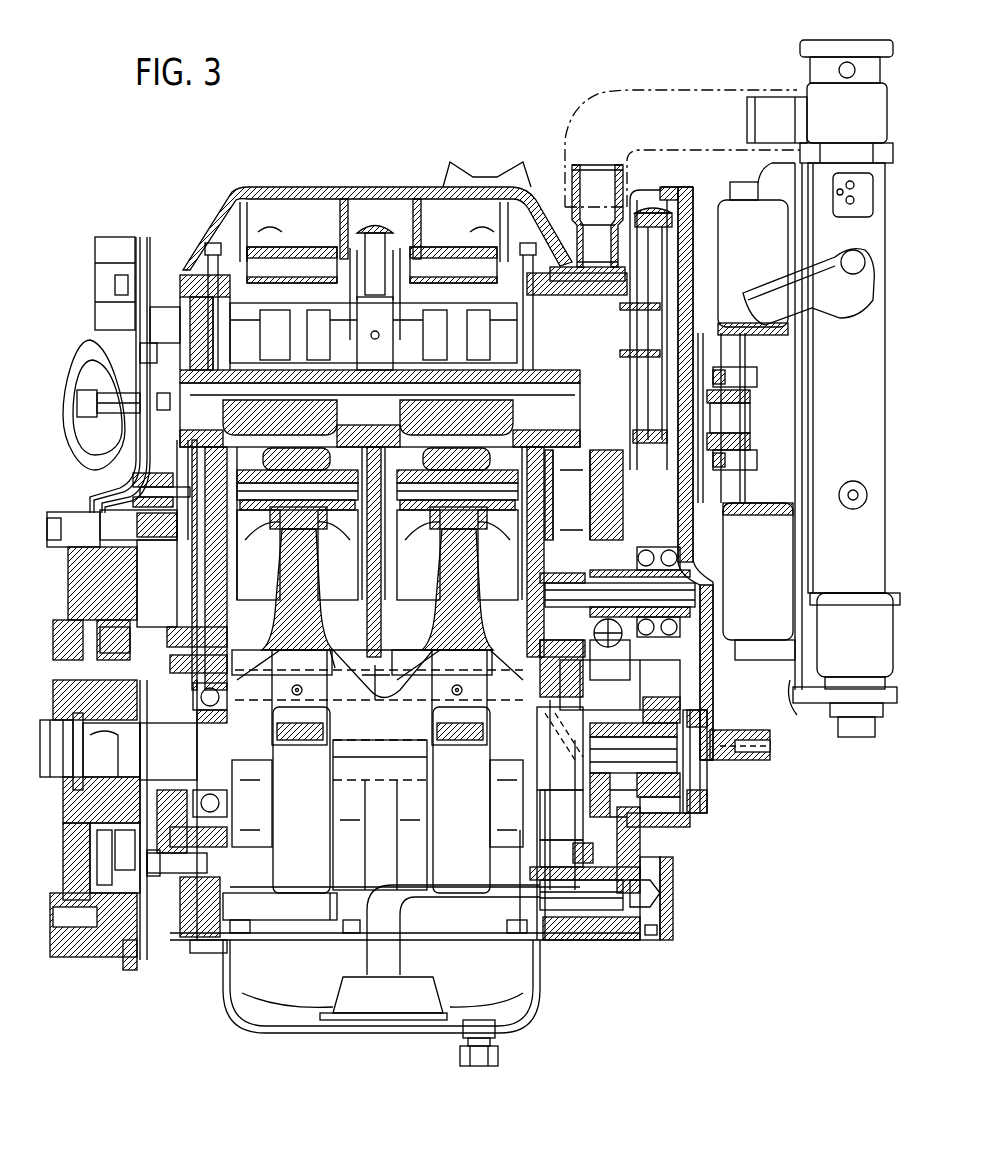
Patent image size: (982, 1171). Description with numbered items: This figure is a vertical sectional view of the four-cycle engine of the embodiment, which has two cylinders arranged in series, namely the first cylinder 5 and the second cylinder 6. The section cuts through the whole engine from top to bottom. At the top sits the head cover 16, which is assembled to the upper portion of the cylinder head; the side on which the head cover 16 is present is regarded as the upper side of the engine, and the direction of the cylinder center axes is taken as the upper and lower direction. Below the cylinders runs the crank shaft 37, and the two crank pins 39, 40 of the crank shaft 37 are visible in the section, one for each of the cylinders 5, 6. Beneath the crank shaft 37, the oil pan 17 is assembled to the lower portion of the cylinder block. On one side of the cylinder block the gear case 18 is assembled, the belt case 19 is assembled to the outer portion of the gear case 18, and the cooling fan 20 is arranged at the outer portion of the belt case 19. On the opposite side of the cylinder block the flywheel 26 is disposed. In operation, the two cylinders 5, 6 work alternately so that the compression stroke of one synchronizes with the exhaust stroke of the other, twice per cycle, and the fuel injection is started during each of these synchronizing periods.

The head cover 16 is at (277, 185).
The second cylinder 6 is at (343, 588).
The first cylinder 5 is at (501, 588).
The crank pin 39 is at (287, 678).
The crank pin 40 is at (447, 678).
The cooling fan 20 is at (763, 543).
The crank shaft 37 is at (650, 757).
The belt case 19 is at (700, 813).
The gear case 18 is at (620, 933).
The oil pan 17 is at (536, 1008).
The flywheel 26 is at (101, 957).